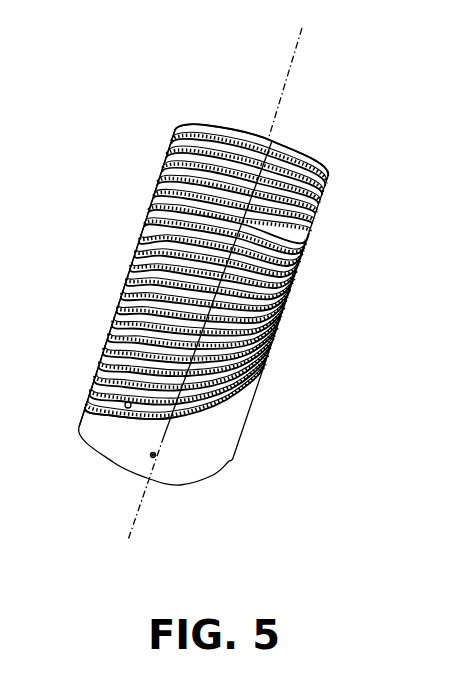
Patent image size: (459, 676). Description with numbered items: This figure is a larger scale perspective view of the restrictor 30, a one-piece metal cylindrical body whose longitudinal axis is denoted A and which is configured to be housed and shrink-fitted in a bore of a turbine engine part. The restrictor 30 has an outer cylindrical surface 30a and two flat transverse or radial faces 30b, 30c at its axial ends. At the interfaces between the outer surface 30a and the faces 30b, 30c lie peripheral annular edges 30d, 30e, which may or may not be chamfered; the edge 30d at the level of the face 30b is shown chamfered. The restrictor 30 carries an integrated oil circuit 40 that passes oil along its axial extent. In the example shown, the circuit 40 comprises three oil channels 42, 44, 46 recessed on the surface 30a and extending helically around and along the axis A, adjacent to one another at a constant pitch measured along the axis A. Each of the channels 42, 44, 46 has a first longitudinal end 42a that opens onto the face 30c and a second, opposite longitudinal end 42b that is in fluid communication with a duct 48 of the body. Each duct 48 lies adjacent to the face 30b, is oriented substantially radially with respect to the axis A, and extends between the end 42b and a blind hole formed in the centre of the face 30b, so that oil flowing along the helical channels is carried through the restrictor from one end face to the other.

The longitudinal axis A is at (297, 62).
The restrictor 30 is at (122, 507).
The outer cylindrical surface 30a is at (117, 315).
The transverse face 30b is at (198, 472).
The transverse face 30c is at (275, 137).
The peripheral annular edge 30d is at (231, 473).
The peripheral annular edge 30e is at (313, 157).
The integrated oil circuit 40 is at (275, 352).
The oil channel 42 is at (250, 440).
The first longitudinal end 42a is at (207, 126).
The second longitudinal end 42b is at (110, 434).
The oil channel 44 is at (254, 423).
The oil channel 46 is at (256, 408).
The duct 48 is at (125, 402).